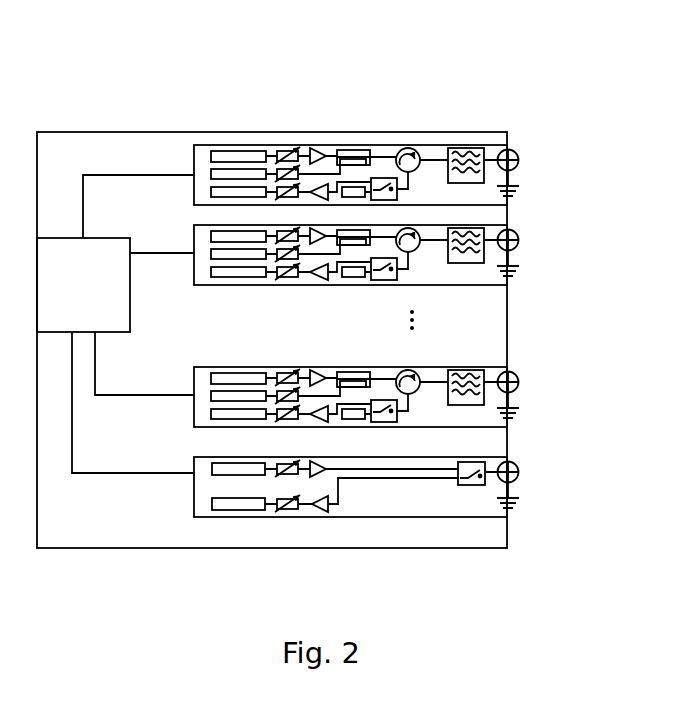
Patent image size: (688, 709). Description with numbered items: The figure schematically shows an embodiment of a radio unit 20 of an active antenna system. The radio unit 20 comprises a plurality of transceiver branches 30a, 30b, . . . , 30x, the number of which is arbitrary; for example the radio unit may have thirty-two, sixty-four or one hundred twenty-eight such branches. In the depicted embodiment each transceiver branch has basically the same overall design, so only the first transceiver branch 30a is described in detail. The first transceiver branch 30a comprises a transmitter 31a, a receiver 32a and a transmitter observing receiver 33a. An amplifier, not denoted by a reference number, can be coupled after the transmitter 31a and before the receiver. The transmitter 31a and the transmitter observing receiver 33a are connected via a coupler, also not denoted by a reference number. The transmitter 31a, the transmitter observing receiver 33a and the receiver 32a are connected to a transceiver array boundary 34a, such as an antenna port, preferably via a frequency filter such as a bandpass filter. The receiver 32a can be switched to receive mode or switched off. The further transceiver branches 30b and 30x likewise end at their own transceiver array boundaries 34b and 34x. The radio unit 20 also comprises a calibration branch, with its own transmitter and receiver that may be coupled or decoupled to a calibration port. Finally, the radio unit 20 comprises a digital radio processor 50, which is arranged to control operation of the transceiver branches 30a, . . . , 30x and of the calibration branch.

The radio unit 20 is at (183, 362).
The digital radio processor 50 is at (93, 301).
The first transceiver branch 30a is at (191, 174).
The transmitter 31a is at (260, 147).
The receiver 32a is at (222, 171).
The transmitter observing receiver 33a is at (245, 161).
The transceiver array boundary 34a is at (519, 164).
The transceiver branch 30b is at (223, 287).
The transceiver array boundary 34b is at (519, 244).
The transceiver branch 30x is at (233, 366).
The transceiver array boundary 34x is at (519, 386).